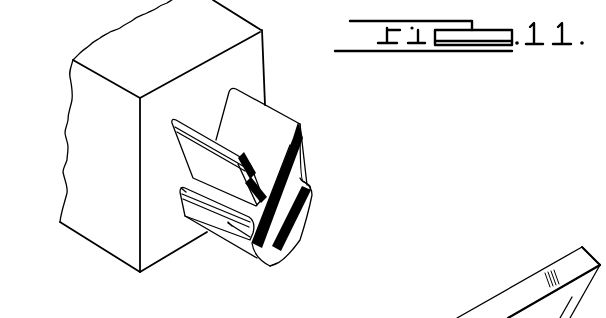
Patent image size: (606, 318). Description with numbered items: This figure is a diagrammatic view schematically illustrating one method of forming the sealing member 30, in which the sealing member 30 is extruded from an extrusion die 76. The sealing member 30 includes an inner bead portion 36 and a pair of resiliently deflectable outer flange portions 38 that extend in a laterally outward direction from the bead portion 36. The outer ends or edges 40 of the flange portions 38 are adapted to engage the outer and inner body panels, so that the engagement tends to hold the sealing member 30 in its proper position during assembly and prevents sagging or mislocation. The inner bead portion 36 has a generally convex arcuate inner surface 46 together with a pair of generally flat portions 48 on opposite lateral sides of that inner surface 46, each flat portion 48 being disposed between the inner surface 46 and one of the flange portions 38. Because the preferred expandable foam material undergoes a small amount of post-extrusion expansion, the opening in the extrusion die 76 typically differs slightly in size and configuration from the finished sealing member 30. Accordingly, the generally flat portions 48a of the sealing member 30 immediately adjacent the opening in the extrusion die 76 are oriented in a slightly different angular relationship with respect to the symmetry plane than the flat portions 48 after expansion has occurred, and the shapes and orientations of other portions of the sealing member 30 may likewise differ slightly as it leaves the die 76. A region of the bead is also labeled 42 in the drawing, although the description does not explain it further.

The sealing member 30 is at (232, 170).
The inner bead portion 36 is at (297, 243).
The outer flange portions 38 is at (291, 160).
The outer ends or edges 40 is at (183, 121).
The hinge / notch region 42 is at (299, 181).
The convex arcuate inner surface 46 is at (277, 263).
The flat portions 48 is at (301, 183).
The flat portions adjacent the die opening 48a is at (184, 185).
The extrusion die 76 is at (107, 222).